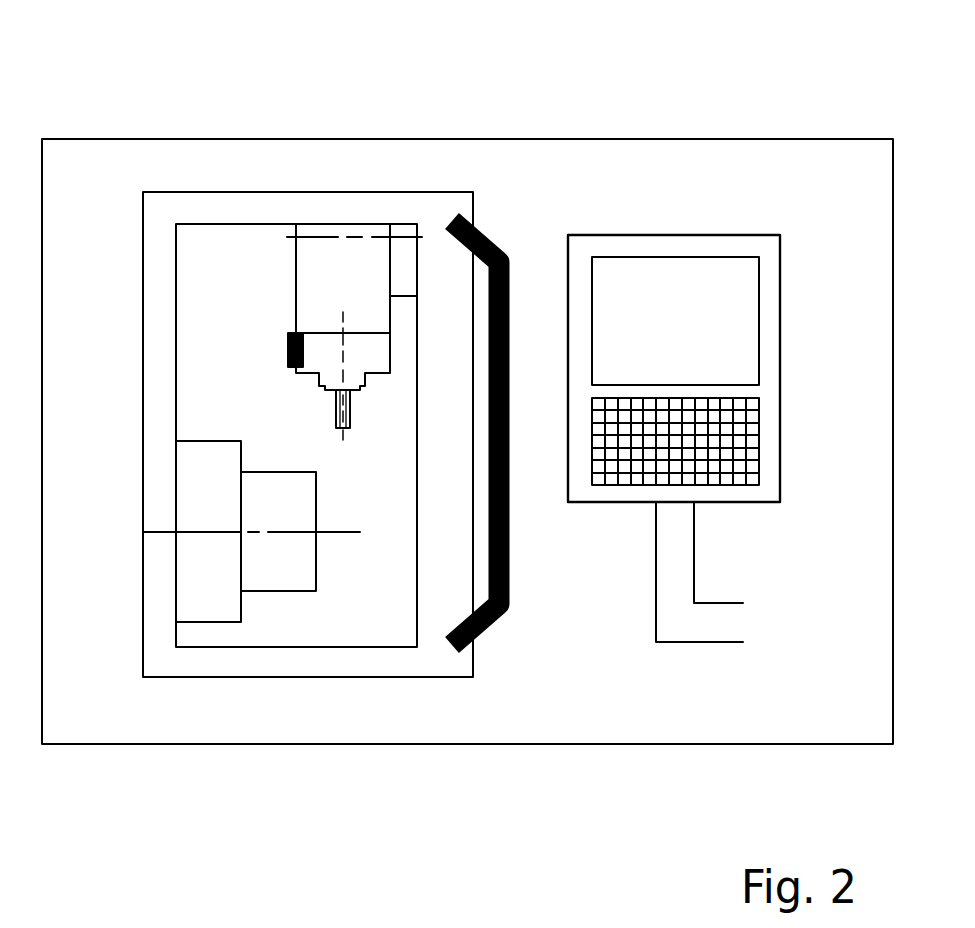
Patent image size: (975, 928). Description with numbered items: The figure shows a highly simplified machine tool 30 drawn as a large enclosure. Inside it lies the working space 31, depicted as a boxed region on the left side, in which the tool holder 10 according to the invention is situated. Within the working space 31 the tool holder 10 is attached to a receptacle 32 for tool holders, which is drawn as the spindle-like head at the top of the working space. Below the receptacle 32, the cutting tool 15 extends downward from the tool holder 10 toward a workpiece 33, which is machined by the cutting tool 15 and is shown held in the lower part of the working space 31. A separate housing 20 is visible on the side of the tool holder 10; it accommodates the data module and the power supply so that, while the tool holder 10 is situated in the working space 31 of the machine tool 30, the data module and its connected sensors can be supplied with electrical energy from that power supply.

The tool holder 10 is at (367, 407).
The cutting tool 15 is at (336, 420).
The separate housing 20 is at (288, 350).
The machine tool 30 is at (635, 138).
The working space 31 is at (210, 248).
The receptacle for tool holders 32 is at (338, 270).
The workpiece 33 is at (273, 560).